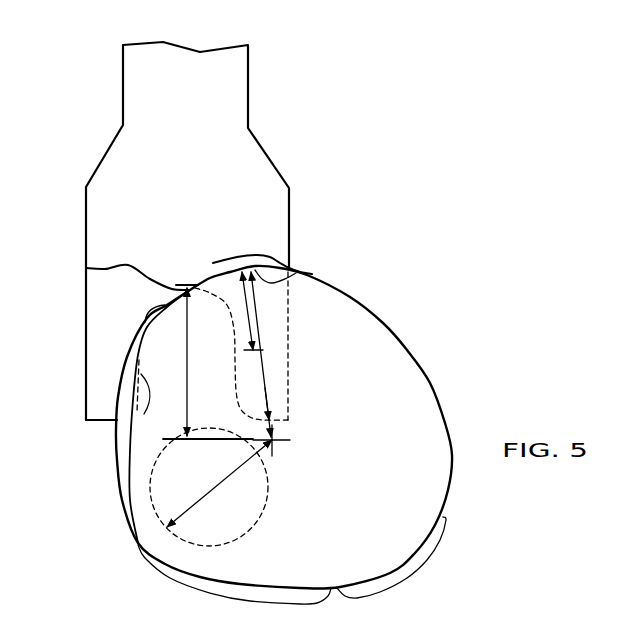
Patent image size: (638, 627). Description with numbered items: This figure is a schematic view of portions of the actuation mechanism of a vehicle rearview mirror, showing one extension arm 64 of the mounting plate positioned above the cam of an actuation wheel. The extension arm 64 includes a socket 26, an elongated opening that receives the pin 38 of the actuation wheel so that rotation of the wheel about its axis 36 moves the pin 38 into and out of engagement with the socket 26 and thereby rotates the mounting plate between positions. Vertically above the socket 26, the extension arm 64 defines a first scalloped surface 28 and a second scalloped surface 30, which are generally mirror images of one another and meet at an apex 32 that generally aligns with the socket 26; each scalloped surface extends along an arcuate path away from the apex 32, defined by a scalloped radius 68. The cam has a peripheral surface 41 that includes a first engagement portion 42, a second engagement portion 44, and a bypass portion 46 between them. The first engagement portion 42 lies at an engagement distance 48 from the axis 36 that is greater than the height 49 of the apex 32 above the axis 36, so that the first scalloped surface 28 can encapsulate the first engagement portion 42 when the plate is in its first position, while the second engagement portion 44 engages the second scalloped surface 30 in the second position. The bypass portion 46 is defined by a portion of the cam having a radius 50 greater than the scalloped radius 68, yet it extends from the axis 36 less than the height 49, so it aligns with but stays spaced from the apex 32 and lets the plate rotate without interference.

The extension arm 64 is at (242, 152).
The second scalloped surface 30 is at (128, 266).
The apex 32 is at (198, 279).
The first engagement portion 42 is at (213, 273).
The peripheral surface 41 is at (407, 349).
The first scalloped surface 28 is at (290, 277).
The socket 26 is at (148, 377).
The scalloped radius 68 is at (248, 315).
The engagement distance 48 is at (268, 376).
The height 49 is at (187, 363).
The axis 36 is at (276, 442).
The radius 50 is at (208, 495).
The pin 38 is at (267, 503).
The bypass portion 46 is at (138, 545).
The second engagement portion 44 is at (407, 578).